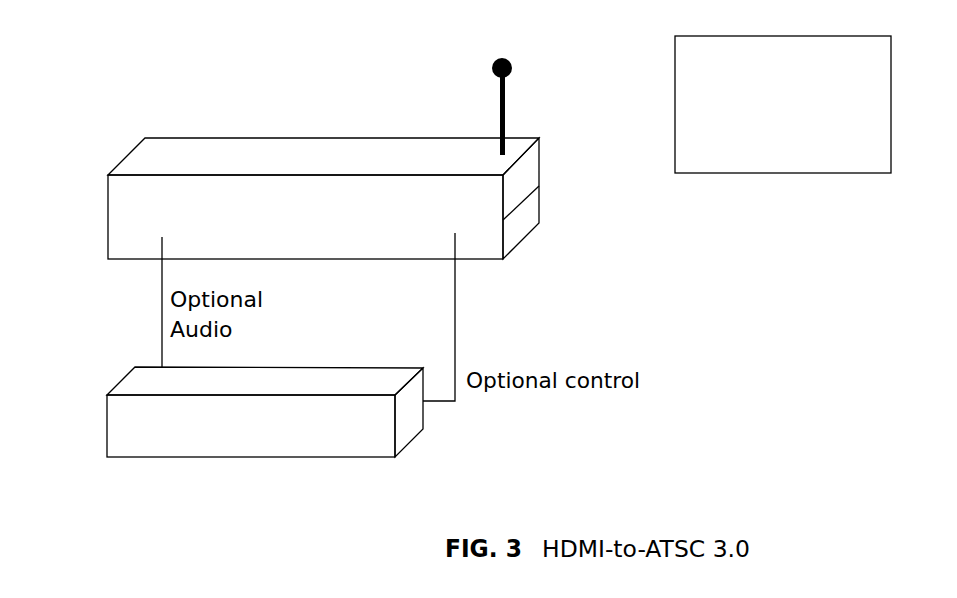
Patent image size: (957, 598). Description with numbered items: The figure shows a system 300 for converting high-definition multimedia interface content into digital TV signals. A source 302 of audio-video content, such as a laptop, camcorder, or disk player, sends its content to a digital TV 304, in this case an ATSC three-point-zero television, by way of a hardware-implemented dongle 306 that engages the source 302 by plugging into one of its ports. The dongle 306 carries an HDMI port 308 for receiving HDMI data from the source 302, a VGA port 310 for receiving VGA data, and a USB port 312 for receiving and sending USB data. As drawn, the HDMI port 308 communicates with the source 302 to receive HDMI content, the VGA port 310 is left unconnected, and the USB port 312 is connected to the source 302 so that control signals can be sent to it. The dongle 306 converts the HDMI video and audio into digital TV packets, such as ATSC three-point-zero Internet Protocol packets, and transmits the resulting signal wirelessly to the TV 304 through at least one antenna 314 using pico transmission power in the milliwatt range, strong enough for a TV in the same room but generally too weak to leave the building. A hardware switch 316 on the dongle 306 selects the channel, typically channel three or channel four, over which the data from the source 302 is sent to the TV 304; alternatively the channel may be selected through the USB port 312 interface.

The system 300 is at (72, 278).
The source 302 is at (405, 428).
The digital TV 304 is at (815, 36).
The dongle 306 is at (329, 153).
The HDMI port 308 is at (126, 218).
The VGA port 310 is at (308, 232).
The USB port 312 is at (467, 233).
The antenna 314 is at (512, 66).
The hardware switch 316 is at (537, 168).